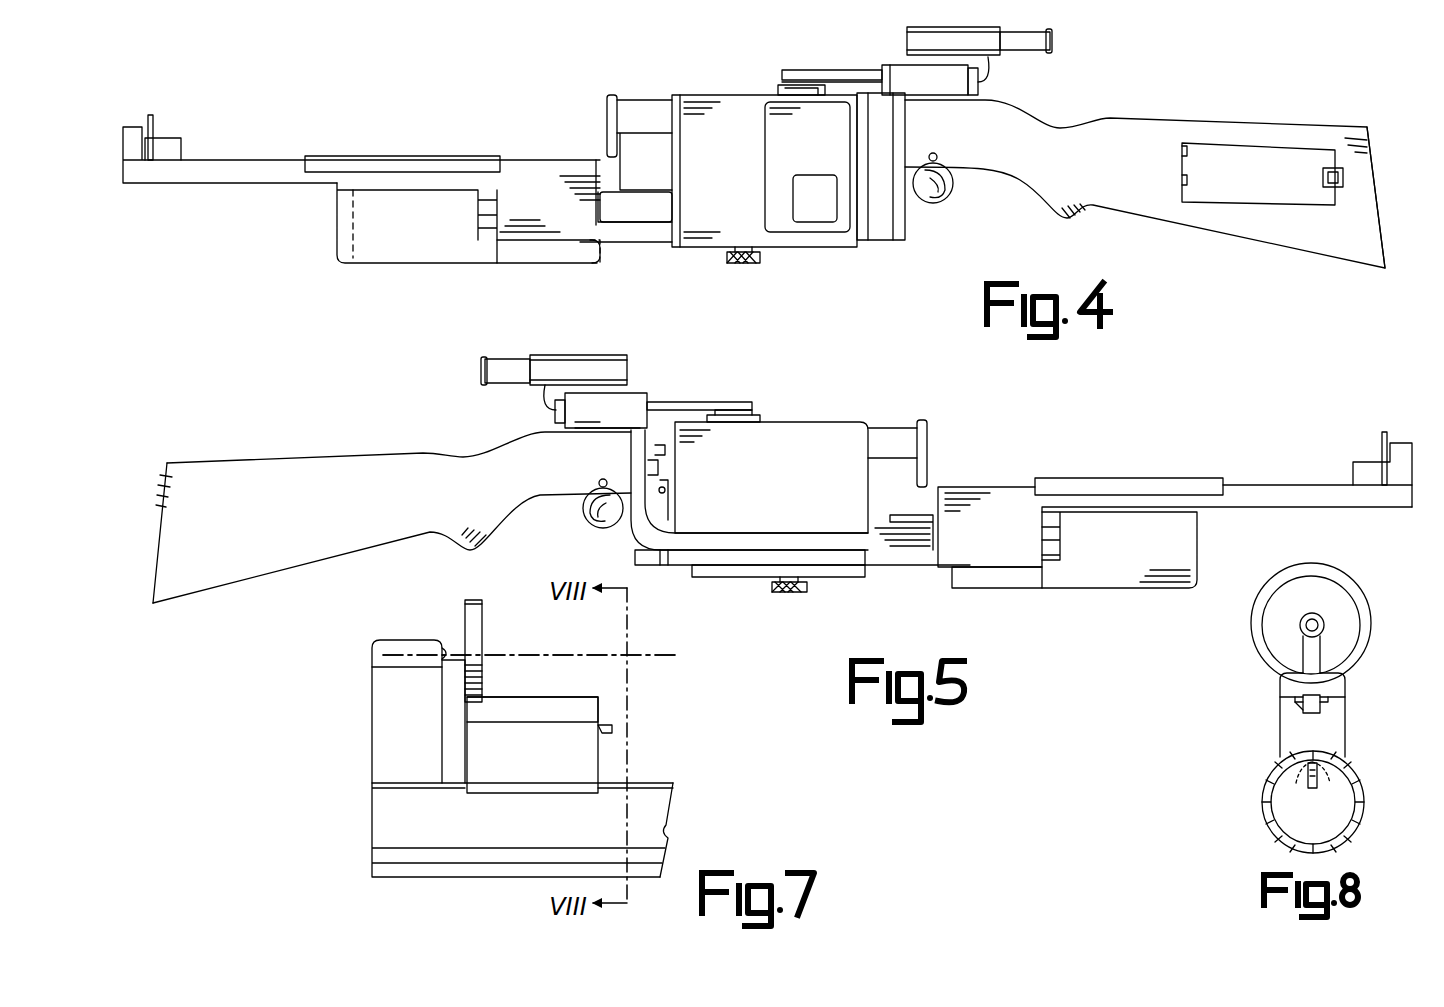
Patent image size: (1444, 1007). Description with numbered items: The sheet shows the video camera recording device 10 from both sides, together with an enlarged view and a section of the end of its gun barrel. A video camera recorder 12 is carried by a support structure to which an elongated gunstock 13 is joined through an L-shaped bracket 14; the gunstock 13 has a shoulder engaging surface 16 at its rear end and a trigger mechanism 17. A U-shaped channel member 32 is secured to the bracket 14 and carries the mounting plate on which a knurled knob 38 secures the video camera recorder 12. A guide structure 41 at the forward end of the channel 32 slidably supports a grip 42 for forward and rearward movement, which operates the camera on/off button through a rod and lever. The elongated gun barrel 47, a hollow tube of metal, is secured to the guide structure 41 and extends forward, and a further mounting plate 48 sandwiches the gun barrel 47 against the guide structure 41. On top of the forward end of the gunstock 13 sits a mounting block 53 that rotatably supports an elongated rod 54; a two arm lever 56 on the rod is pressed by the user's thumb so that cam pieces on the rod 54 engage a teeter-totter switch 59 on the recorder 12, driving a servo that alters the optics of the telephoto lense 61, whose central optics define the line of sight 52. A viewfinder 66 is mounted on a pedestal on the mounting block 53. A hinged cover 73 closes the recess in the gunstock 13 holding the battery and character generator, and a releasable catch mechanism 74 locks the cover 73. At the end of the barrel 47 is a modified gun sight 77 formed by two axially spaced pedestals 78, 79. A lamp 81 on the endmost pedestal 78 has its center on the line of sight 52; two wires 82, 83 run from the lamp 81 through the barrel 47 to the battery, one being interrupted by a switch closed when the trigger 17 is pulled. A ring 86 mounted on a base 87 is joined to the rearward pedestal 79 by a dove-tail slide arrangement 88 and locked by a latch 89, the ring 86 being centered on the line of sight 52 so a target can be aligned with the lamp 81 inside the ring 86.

In FIG. 4, the video camera recording device 10 is at (862, 262).
In FIG. 5, the video camera recording device 10 is at (722, 592).
In FIG. 4, the video camera recorder 12 is at (715, 98).
In FIG. 5, the video camera recorder 12 is at (835, 428).
In FIG. 4, the gunstock 13 is at (1116, 118).
In FIG. 5, the gunstock 13 is at (314, 452).
In FIG. 5, the bracket 14 is at (650, 525).
In FIG. 4, the shoulder engaging surface 16 is at (1376, 163).
In FIG. 5, the shoulder engaging surface 16 is at (162, 520).
In FIG. 4, the trigger mechanism 17 is at (946, 193).
In FIG. 5, the trigger mechanism 17 is at (590, 520).
In FIG. 4, the U-shaped channel member 32 is at (628, 246).
In FIG. 5, the U-shaped channel member 32 is at (895, 568).
In FIG. 4, the knurled knob 38 is at (745, 266).
In FIG. 5, the knurled knob 38 is at (793, 595).
In FIG. 4, the guide structure 41 is at (520, 246).
In FIG. 5, the guide structure 41 is at (1000, 572).
In FIG. 4, the grip 42 is at (395, 260).
In FIG. 5, the grip 42 is at (1080, 592).
In FIG. 4, the gun barrel 47 is at (220, 162).
In FIG. 5, the gun barrel 47 is at (1308, 490).
In FIG. 7, the gun barrel 47 is at (648, 795).
In FIG. 8, the gun barrel 47 is at (1364, 795).
In FIG. 4, the mounting plate 48 is at (445, 158).
In FIG. 5, the mounting plate 48 is at (1125, 478).
In FIG. 7, the line of sight 52 is at (633, 655).
In FIG. 4, the mounting block 53 is at (912, 75).
In FIG. 5, the mounting block 53 is at (630, 400).
In FIG. 4, the elongated rod 54 is at (850, 70).
In FIG. 5, the elongated rod 54 is at (706, 402).
In FIG. 4, the two arm lever 56 is at (985, 92).
In FIG. 5, the two arm lever 56 is at (554, 414).
In FIG. 4, the teeter-totter switch 59 is at (776, 88).
In FIG. 5, the teeter-totter switch 59 is at (765, 418).
In FIG. 4, the telephoto lense 61 is at (640, 117).
In FIG. 4, the viewfinder 66 is at (962, 32).
In FIG. 5, the viewfinder 66 is at (572, 372).
In FIG. 4, the hinged cover 73 is at (1245, 170).
In FIG. 4, the releasable catch mechanism 74 is at (1342, 165).
In FIG. 4, the gun sight 77 is at (140, 112).
In FIG. 5, the gun sight 77 is at (1398, 428).
In FIG. 7, the gun sight 77 is at (415, 617).
In FIG. 7, the pedestal 78 is at (390, 715).
In FIG. 7, the pedestal 79 is at (575, 756).
In FIG. 8, the pedestal 79 is at (1328, 742).
In FIG. 7, the lamp 81 is at (450, 646).
In FIG. 8, the lamp 81 is at (1316, 622).
In FIG. 8, the wire 82 is at (1296, 792).
In FIG. 8, the wire 83 is at (1326, 792).
In FIG. 7, the ring 86 is at (475, 632).
In FIG. 8, the ring 86 is at (1300, 570).
In FIG. 7, the base 87 is at (510, 703).
In FIG. 8, the base 87 is at (1335, 680).
In FIG. 8, the dove-tail slide arrangement 88 is at (1325, 700).
In FIG. 7, the latch 89 is at (610, 728).
In FIG. 8, the latch 89 is at (1305, 710).